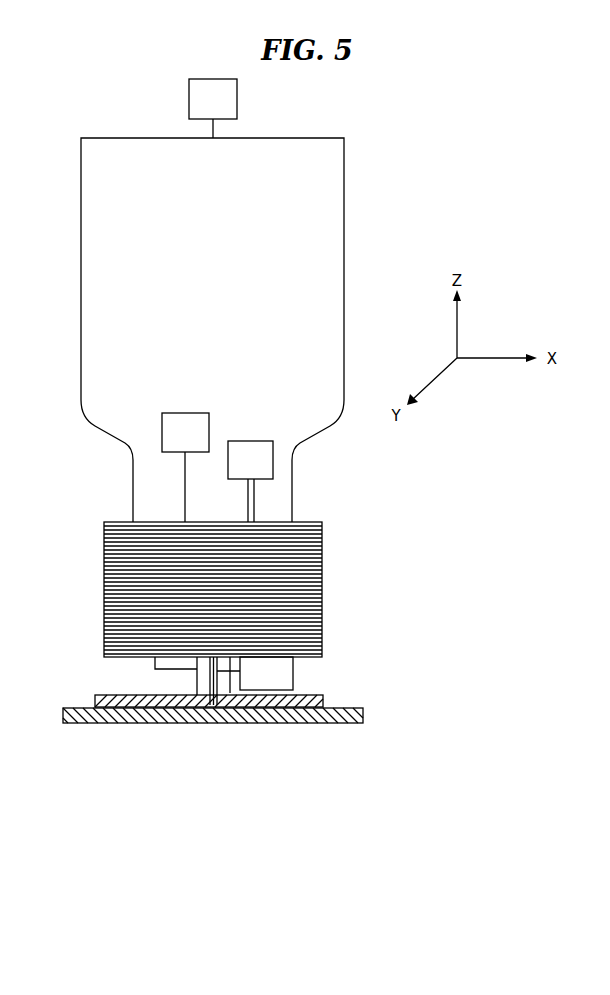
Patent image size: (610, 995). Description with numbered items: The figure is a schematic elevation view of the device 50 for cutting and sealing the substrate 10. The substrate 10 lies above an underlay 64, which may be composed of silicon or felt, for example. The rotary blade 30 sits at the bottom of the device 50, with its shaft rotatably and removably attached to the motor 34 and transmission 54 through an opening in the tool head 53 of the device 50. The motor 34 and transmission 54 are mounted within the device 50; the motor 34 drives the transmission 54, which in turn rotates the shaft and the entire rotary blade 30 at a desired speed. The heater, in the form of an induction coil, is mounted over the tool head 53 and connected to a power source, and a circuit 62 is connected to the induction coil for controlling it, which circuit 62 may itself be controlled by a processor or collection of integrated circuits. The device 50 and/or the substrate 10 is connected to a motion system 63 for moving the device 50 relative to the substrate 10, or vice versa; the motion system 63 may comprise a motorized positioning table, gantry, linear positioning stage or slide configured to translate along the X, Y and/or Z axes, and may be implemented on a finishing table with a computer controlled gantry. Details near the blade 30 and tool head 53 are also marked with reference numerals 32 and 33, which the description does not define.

The device 50 is at (335, 220).
The motion system 63 is at (213, 108).
The circuit 62 is at (185, 467).
The motor 34 is at (250, 460).
The transmission 54 is at (254, 491).
The rotary blade 30 is at (208, 684).
The first electrode 32 is at (193, 687).
The second electrode 33 is at (220, 697).
The tool head 53 is at (295, 678).
The substrate 10 is at (305, 697).
The underlay 64 is at (310, 723).